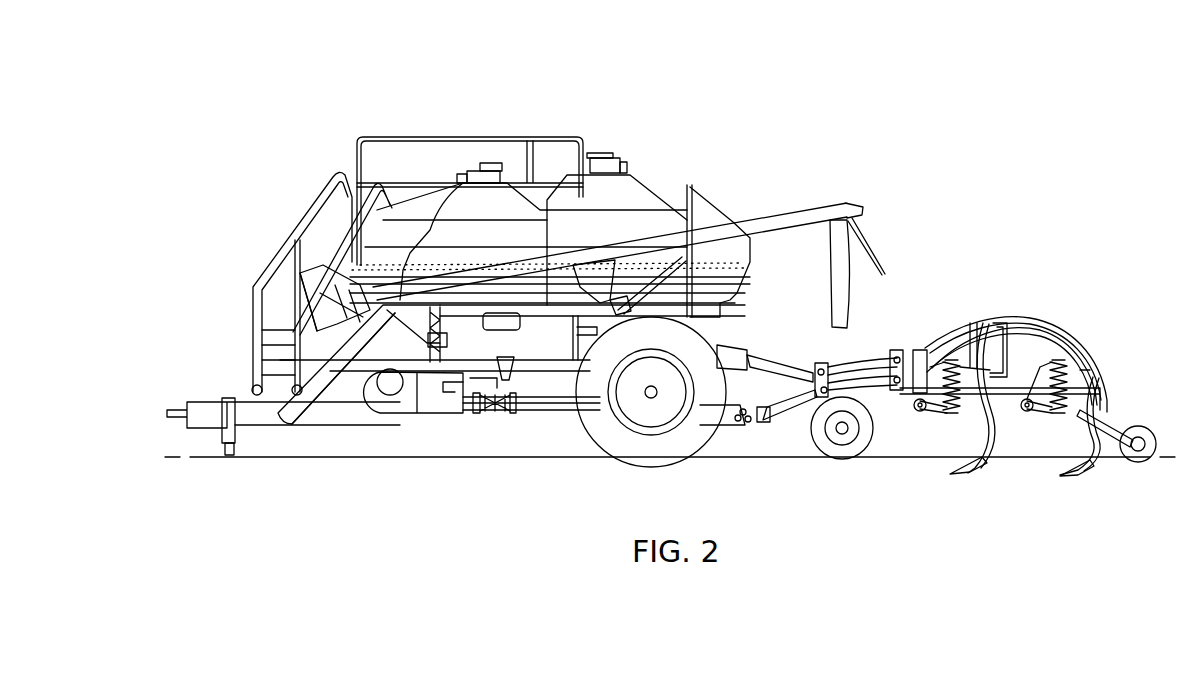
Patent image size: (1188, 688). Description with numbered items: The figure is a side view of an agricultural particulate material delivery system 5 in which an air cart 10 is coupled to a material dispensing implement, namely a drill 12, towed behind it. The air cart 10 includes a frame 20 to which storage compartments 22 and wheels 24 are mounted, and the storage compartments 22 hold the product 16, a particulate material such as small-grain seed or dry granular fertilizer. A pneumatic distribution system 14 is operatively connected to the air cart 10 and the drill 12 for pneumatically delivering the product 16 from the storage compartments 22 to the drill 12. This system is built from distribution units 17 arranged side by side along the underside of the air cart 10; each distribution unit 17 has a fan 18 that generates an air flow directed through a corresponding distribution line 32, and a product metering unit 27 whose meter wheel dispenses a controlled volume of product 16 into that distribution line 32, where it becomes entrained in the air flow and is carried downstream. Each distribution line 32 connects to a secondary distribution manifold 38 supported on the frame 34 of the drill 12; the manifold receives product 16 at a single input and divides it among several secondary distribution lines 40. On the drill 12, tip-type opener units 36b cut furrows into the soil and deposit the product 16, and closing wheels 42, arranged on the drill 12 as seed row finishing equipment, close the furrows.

The agricultural particulate material delivery system 5 is at (225, 118).
The air cart 10 is at (526, 267).
The drill 12 is at (841, 382).
The pneumatic distribution system 14 is at (452, 422).
The product 16 is at (748, 257).
The distribution unit 17 is at (355, 410).
The fan 18 is at (384, 398).
The frame 20 is at (246, 398).
The storage compartment 22 is at (458, 188).
The wheel 24 is at (653, 447).
The product metering unit 27 is at (490, 400).
The distribution line 32 is at (527, 410).
The frame 34 is at (1005, 398).
The tip-type opener unit 36b is at (971, 482).
The secondary distribution manifold 38 is at (1008, 315).
The secondary distribution line 40 is at (938, 343).
The closing wheel 42 is at (1138, 424).